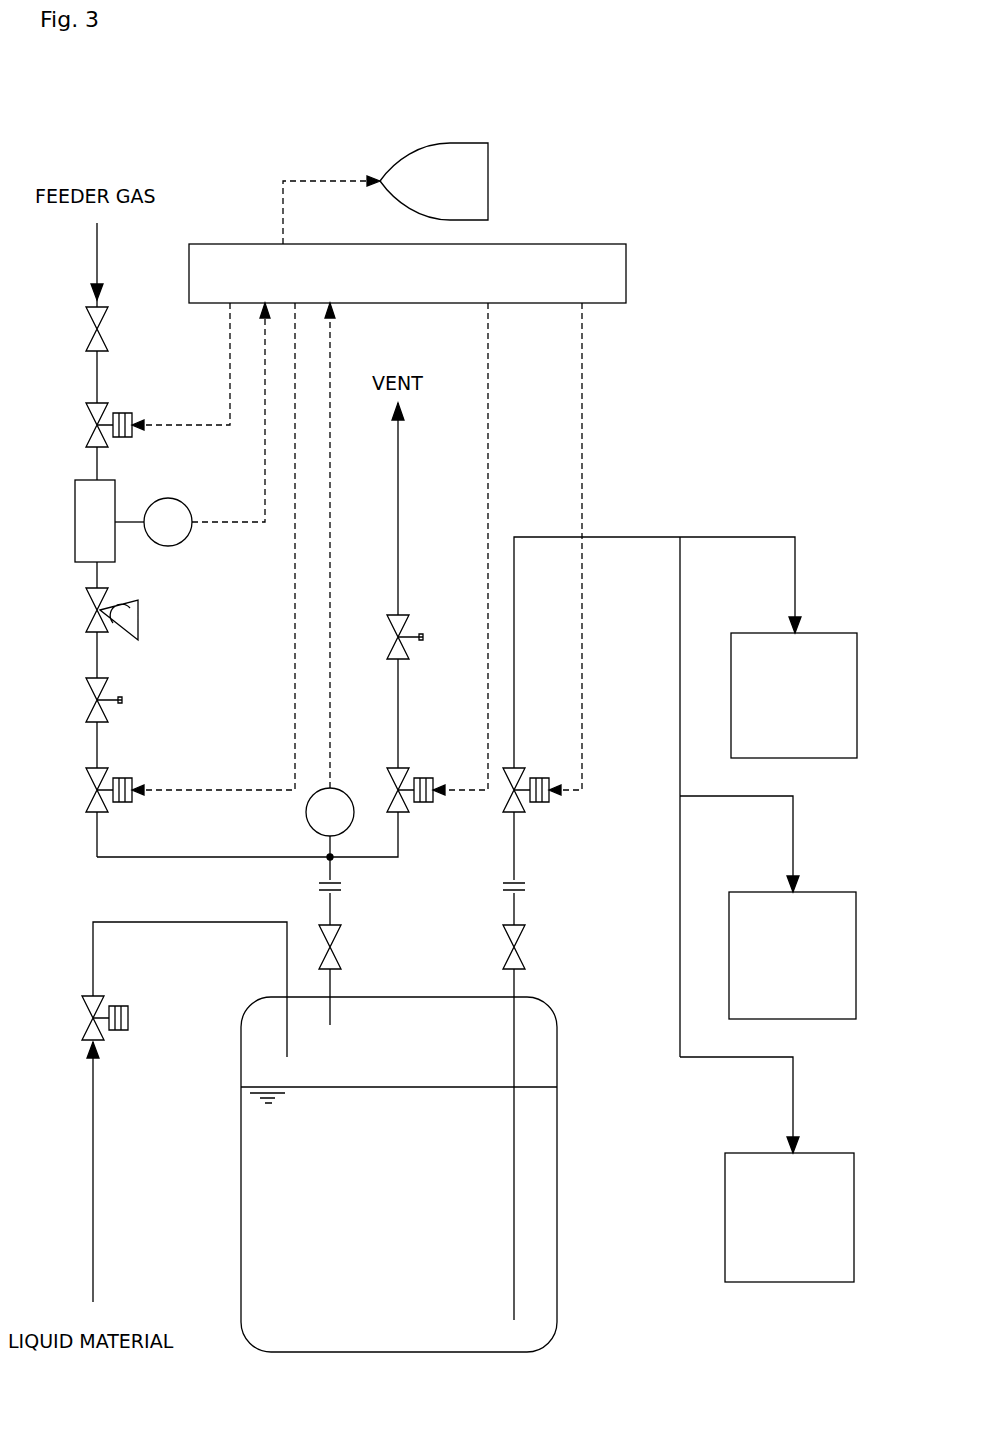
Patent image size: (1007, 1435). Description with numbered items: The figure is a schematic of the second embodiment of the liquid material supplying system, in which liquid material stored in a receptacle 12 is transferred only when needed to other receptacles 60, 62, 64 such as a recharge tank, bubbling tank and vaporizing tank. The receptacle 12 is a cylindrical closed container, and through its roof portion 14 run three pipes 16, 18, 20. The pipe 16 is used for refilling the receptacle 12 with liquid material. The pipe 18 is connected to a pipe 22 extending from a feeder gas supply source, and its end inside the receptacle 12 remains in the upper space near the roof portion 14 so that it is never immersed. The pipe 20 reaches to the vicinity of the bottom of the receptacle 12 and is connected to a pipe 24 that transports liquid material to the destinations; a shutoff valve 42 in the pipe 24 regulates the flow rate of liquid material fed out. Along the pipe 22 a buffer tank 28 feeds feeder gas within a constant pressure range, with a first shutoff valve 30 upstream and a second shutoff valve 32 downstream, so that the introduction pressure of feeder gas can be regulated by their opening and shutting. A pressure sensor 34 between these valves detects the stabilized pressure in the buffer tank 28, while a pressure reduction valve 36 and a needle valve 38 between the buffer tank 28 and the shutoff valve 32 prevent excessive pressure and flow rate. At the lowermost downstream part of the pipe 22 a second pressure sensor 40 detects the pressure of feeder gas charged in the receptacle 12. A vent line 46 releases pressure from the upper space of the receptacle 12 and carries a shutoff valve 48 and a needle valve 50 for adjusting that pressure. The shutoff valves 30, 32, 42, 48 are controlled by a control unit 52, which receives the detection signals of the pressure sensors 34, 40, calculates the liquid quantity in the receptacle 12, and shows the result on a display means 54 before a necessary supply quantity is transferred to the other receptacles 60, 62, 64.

The receptacle 12 is at (563, 1053).
The roof portion 14 is at (460, 995).
The pipe 16 is at (93, 1130).
The first pipe 18 is at (333, 900).
The second pipe 20 is at (517, 900).
The first pipe 22 is at (185, 857).
The second pipe 24 is at (543, 537).
The buffer tank 28 is at (75, 520).
The first shutoff valve 30 is at (97, 408).
The second shutoff valve 32 is at (97, 765).
The first pressure detection means 34 is at (168, 498).
The pressure reduction valve 36 is at (85, 598).
The needle valve 38 is at (102, 672).
The second pressure detection means 40 is at (306, 834).
The shutoff valve 42 is at (543, 805).
The pipe 46 is at (400, 493).
The shutoff valve 48 is at (400, 765).
The needle valve 50 is at (402, 612).
The control unit 52 is at (547, 243).
The display means 54 is at (490, 180).
The other receptacle 60 is at (838, 633).
The other receptacle 62 is at (835, 892).
The other receptacle 64 is at (832, 1153).